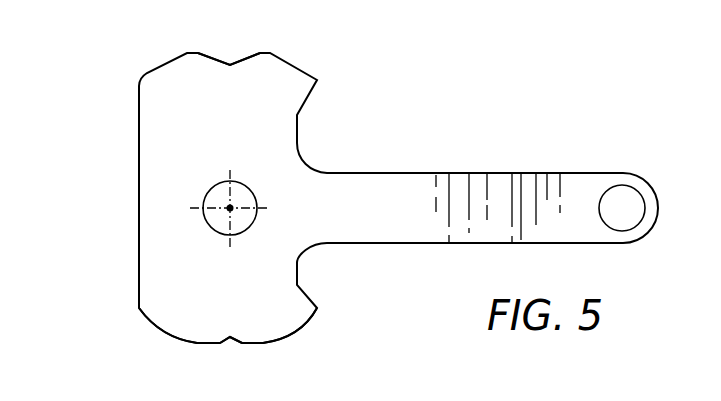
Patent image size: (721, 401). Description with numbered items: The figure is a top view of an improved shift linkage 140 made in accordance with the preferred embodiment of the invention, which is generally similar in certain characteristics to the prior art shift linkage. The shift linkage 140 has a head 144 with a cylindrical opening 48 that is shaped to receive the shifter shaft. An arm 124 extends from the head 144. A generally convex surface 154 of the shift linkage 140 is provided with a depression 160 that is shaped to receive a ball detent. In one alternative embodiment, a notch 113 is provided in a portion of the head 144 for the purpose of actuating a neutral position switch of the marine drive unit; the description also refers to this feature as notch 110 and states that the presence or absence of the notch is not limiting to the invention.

The shift linkage 140 is at (128, 249).
The head 144 is at (138, 122).
The notch 113 is at (230, 63).
The cylindrical opening 48 is at (252, 192).
The notch 110 is at (233, 212).
The generally convex surface 154 is at (162, 328).
The depression 160 is at (231, 348).
The arm 124 is at (485, 228).